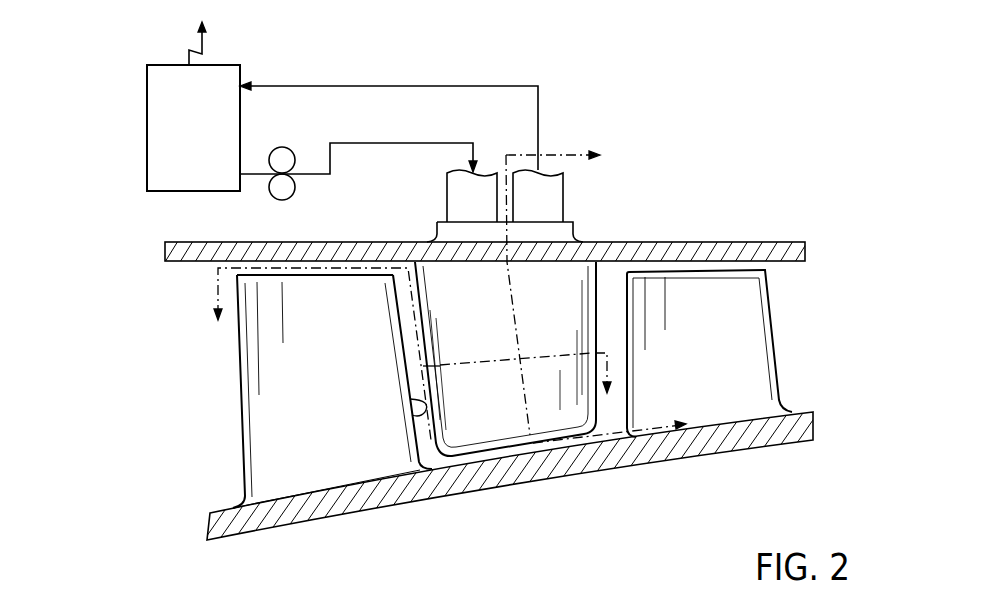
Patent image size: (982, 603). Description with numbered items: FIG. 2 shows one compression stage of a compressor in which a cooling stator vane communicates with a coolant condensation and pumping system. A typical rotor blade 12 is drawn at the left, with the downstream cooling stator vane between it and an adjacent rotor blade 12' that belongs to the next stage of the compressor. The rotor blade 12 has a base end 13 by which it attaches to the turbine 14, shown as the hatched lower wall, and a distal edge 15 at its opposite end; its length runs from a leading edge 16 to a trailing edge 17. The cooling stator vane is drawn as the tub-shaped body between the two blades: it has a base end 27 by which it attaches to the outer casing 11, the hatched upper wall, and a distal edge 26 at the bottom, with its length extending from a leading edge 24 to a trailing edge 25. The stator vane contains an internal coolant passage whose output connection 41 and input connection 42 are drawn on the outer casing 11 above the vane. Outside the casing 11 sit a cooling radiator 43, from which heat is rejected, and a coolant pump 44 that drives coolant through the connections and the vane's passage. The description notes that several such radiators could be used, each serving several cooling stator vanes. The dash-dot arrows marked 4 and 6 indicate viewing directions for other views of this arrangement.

The section line / viewing direction of FIG. 4 is at (408, 354).
The section line / viewing direction of FIG. 6 is at (596, 279).
The outer casing 11 is at (718, 242).
The rotor blade 12 is at (306, 386).
The adjacent rotor blade 12' is at (765, 353).
The base end 13 is at (312, 485).
The turbine 14 is at (360, 502).
The distal edge 15 is at (315, 288).
The leading edge 16 is at (240, 362).
The trailing edge 17 is at (410, 399).
The leading edge 24 is at (437, 428).
The trailing edge 25 is at (597, 330).
The distal edge 26 is at (490, 420).
The base end 27 is at (462, 278).
The output connection 41 is at (548, 193).
The input connection 42 is at (468, 203).
The cooling radiator 43 is at (168, 135).
The coolant pump 44 is at (285, 162).